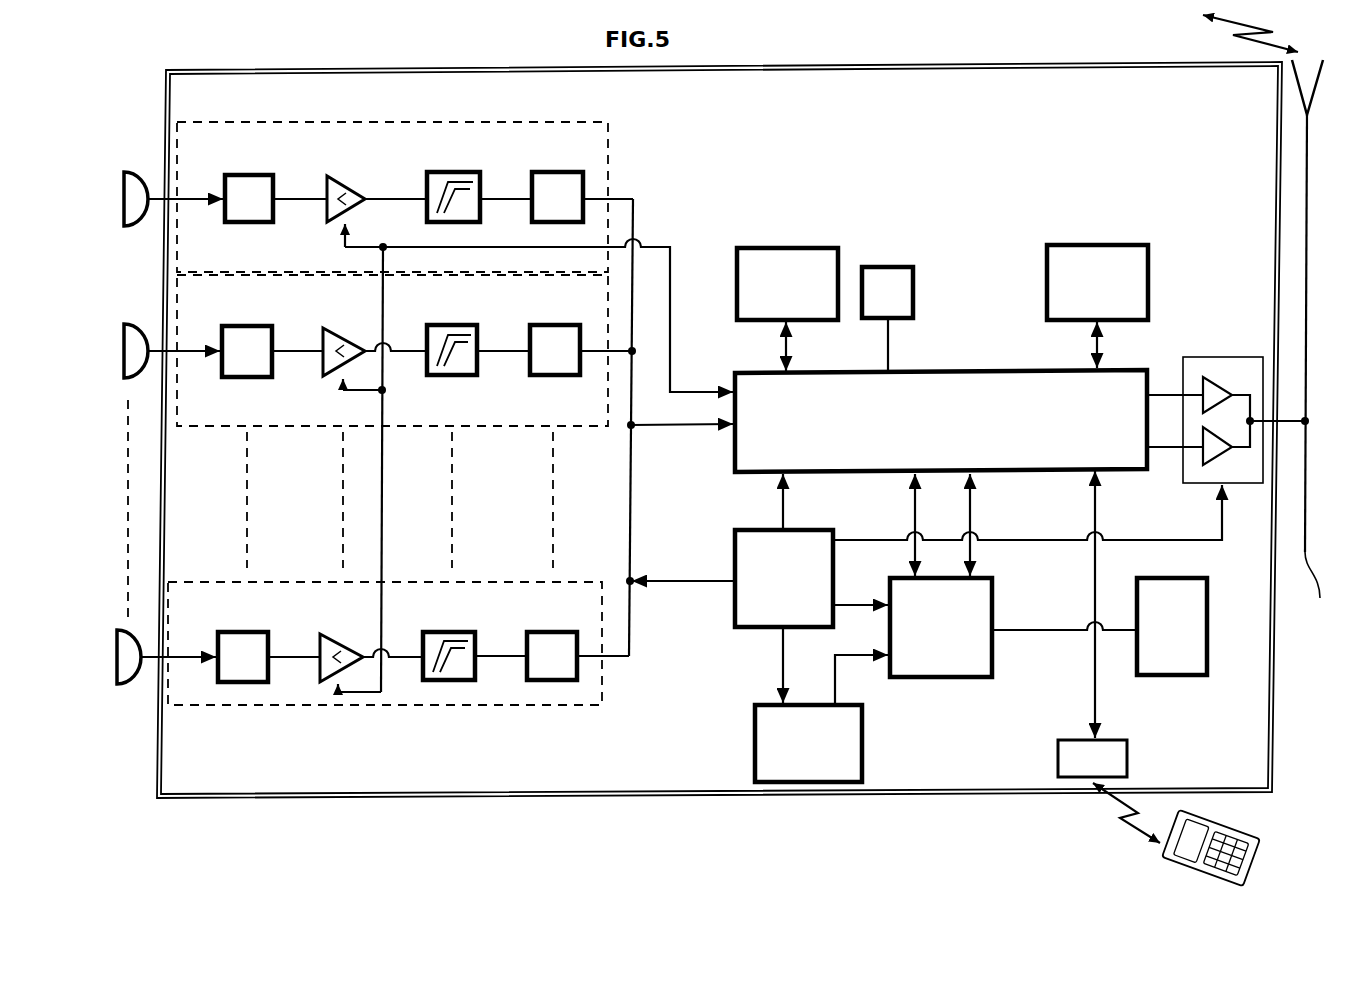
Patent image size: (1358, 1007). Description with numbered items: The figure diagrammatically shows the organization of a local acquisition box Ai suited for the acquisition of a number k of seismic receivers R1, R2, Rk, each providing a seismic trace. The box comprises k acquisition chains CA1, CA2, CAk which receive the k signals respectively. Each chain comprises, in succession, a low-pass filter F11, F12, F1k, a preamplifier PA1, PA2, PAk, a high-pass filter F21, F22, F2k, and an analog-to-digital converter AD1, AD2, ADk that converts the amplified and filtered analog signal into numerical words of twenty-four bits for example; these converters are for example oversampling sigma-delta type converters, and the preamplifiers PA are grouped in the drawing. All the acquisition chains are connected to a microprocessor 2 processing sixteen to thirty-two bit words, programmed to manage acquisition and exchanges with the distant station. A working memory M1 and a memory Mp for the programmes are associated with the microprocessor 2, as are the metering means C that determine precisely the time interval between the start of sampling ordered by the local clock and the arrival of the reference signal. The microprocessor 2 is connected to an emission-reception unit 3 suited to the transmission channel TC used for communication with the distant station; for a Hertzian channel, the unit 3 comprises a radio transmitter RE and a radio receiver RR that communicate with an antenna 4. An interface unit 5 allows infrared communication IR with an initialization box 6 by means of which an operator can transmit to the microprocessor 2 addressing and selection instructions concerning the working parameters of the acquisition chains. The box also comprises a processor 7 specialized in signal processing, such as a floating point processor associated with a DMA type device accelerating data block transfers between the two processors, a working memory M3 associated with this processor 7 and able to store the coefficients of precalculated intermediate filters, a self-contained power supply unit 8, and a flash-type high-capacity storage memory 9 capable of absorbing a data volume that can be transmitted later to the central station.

The acquisition box Ai is at (162, 82).
The first acquisition chain CA1 is at (613, 140).
The second acquisition chain CA2 is at (505, 432).
The k-th acquisition chain CAk is at (532, 710).
The first seismic receiver R1 is at (117, 199).
The second seismic receiver R2 is at (117, 351).
The k-th seismic receiver Rk is at (112, 657).
The low-pass filter F11 is at (249, 185).
The low-pass filter F12 is at (247, 338).
The low-pass filter F1k is at (243, 644).
The preamplifier PA1 is at (346, 185).
The preamplifier PA2 is at (344, 338).
The preamplifier PAk is at (341, 644).
The high-pass filter F21 is at (453, 184).
The high-pass filter F22 is at (452, 337).
The high-pass filter F2k is at (449, 643).
The analog-to-digital converter AD1 is at (555, 184).
The analog-to-digital converter AD2 is at (553, 337).
The analog-to-digital converter ADk is at (549, 643).
The working memory M1 is at (787, 284).
The metering means C is at (887, 320).
The programme memory Mp is at (1097, 282).
The working memory M3 is at (808, 743).
The preamplifiers PA is at (955, 283).
The microprocessor 2 is at (941, 421).
The emission-reception unit 3 is at (1226, 392).
The radio transmitter RE is at (1224, 389).
The radio receiver RR is at (1227, 456).
The antenna 4 is at (1305, 295).
The transmission channel TC is at (1307, 591).
The interface unit 5 is at (1092, 758).
The initialization box 6 is at (1257, 832).
The infrared communication IR is at (1126, 814).
The signal-processing processor 7 is at (941, 627).
The power supply unit 8 is at (784, 578).
The storage memory 9 is at (1172, 626).